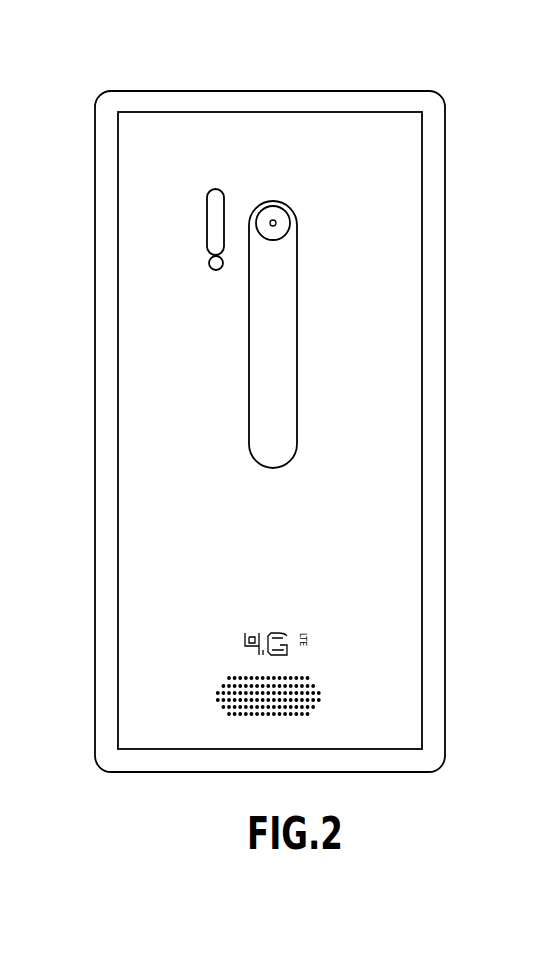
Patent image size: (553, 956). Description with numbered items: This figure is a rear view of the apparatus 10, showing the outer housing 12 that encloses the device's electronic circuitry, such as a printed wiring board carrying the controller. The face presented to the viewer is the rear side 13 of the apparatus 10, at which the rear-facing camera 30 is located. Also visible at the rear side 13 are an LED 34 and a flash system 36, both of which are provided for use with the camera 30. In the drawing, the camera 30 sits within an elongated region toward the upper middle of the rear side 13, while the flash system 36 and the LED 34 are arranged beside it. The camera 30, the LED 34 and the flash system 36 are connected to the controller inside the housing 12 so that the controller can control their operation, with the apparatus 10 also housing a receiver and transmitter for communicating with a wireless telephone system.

The apparatus 10 is at (478, 158).
The housing 12 is at (430, 328).
The rear side 13 is at (408, 415).
The camera 30 is at (282, 219).
The LED 34 is at (210, 265).
The flash system 36 is at (214, 232).